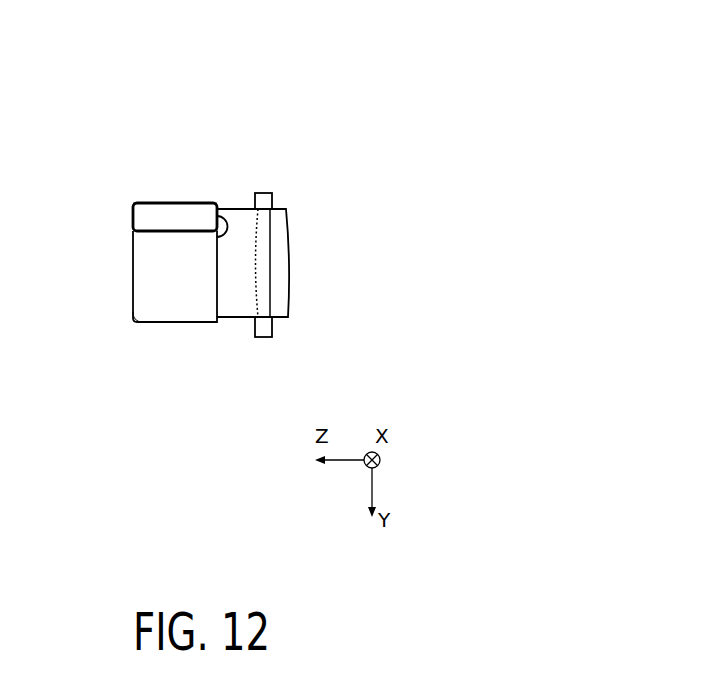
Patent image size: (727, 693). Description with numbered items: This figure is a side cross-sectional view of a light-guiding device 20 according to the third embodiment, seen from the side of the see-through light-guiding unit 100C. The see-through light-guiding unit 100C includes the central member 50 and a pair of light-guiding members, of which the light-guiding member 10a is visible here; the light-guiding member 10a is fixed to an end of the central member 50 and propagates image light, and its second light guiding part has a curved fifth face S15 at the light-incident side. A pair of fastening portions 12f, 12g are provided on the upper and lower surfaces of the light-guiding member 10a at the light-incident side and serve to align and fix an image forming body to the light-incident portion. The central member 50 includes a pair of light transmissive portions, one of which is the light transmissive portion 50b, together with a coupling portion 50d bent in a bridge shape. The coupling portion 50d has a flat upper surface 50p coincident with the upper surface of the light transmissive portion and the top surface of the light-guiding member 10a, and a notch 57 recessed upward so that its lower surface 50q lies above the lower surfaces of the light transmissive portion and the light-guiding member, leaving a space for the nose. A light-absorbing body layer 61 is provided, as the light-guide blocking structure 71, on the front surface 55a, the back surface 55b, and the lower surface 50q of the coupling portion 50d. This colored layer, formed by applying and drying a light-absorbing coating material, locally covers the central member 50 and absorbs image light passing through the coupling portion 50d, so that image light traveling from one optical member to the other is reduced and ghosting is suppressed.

The see-through light-guiding unit 100C is at (229, 116).
The light-guiding device 20 is at (220, 109).
The central member 50 is at (107, 160).
The coupling portion 50d is at (165, 212).
The upper surface 50p is at (177, 203).
The lower surface 50q is at (192, 230).
The front surface 55a is at (133, 217).
The back surface 55b is at (220, 210).
The light-guiding member 10a is at (238, 272).
The fastening portion 12f is at (265, 196).
The fastening portion 12g is at (264, 337).
The light-absorbing body layer 61 is at (149, 274).
The light-guide blocking structure 71 is at (217, 236).
The notch 57 is at (152, 292).
The light transmissive portion 50b is at (157, 318).
The fifth face S15 is at (233, 305).